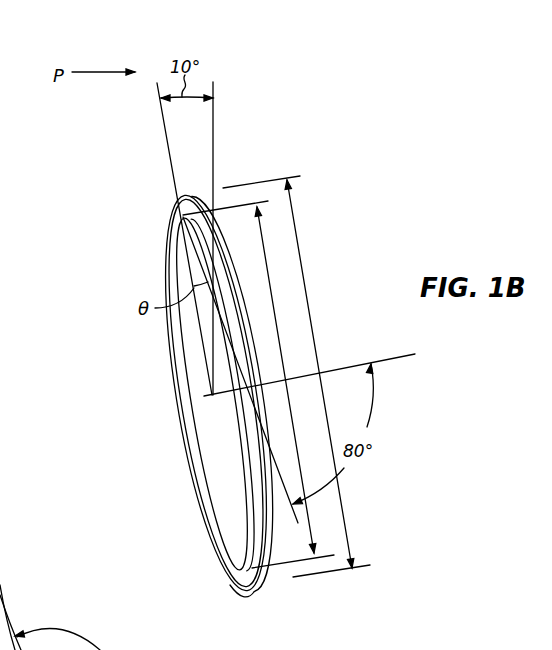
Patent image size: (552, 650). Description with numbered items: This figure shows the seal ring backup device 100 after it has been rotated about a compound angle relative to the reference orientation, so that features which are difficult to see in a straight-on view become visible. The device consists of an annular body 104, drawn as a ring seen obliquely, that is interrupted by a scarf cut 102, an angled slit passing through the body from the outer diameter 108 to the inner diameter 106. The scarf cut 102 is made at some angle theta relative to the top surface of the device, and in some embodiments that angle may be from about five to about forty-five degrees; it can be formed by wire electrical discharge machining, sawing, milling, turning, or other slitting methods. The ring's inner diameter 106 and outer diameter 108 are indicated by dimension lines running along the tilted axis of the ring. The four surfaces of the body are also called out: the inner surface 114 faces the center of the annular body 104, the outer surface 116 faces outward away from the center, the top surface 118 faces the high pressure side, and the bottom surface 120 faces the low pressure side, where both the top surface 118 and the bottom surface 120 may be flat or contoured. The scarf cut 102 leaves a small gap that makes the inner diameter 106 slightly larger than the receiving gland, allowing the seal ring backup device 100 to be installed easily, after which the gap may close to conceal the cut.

The seal ring backup device 100 is at (371, 185).
The scarf cut 102 is at (250, 418).
The annular body 104 is at (167, 222).
The inner diameter 106 is at (308, 516).
The outer diameter 108 is at (346, 528).
The inner surface 114 is at (213, 531).
The outer surface 116 is at (265, 604).
The top surface 118 is at (237, 580).
The bottom surface 120 is at (290, 558).